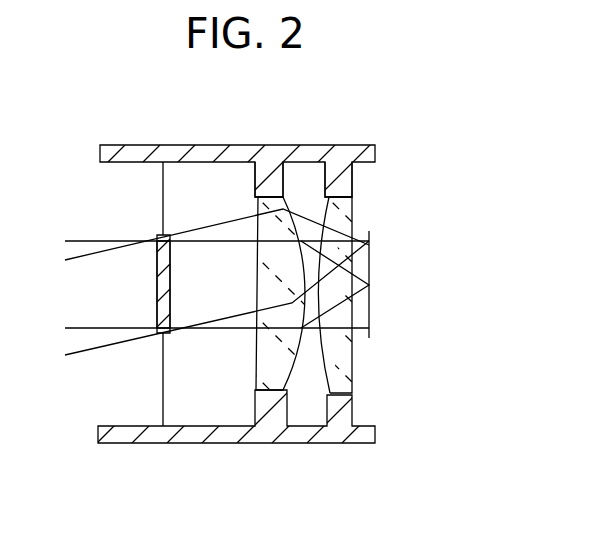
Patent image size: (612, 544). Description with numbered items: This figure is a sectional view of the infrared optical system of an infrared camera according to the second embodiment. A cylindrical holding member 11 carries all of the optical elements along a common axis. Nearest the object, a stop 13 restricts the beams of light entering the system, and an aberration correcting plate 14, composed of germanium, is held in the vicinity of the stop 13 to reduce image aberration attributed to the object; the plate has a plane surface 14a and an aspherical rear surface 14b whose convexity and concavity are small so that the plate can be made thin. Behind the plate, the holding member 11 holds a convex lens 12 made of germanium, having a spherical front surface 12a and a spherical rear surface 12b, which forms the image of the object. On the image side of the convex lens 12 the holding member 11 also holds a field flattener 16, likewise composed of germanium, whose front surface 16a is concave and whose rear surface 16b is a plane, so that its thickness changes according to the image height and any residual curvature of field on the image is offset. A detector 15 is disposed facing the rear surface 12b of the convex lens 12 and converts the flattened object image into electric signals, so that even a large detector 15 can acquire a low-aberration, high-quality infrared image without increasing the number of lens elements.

The holding member 11 is at (247, 444).
The convex lens 12 is at (292, 350).
The front surface 12a is at (257, 198).
The rear surface 12b is at (302, 186).
The stop 13 is at (143, 444).
The aberration correcting plate 14 is at (156, 294).
The plane surface 14a is at (156, 312).
The aspherical rear surface 14b is at (172, 309).
The detector 15 is at (370, 267).
The field flattener 16 is at (377, 298).
The front surface 16a is at (346, 212).
The rear surface 16b is at (352, 343).